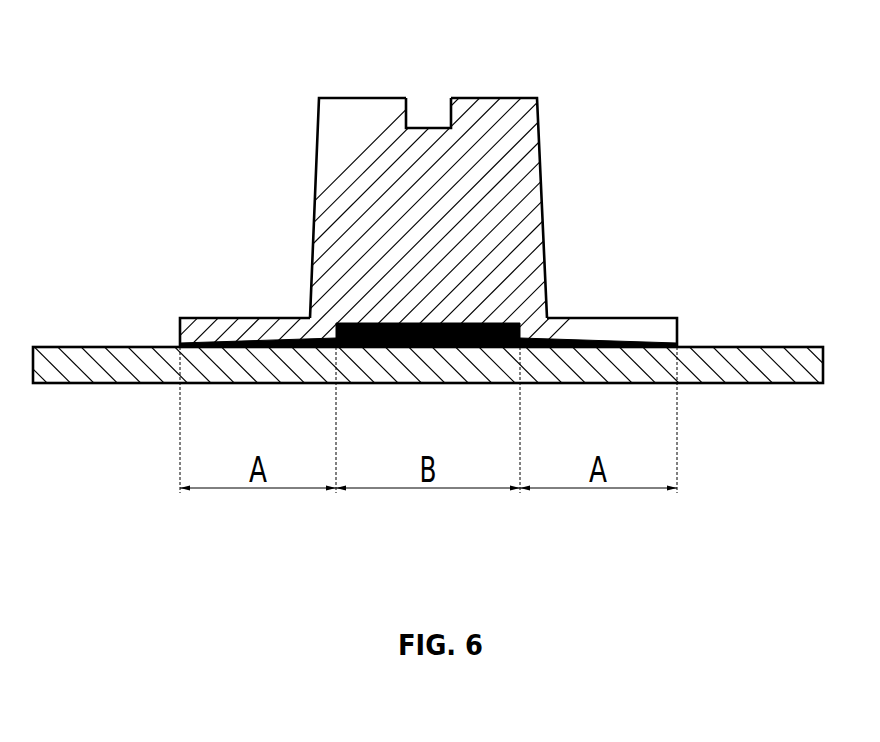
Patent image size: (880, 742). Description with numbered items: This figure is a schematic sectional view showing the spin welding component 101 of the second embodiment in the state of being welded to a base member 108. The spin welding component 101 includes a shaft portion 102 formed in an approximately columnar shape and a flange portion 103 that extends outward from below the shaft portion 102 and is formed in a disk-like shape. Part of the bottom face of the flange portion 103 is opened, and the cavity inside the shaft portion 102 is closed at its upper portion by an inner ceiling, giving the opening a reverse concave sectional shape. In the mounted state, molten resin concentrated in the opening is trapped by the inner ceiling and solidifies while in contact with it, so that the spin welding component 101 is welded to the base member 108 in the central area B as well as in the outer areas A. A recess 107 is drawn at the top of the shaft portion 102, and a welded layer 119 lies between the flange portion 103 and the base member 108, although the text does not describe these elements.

The spin welding component 101 is at (476, 176).
The shaft portion 102 is at (314, 188).
The flange portion 103 is at (210, 333).
The recess / groove 107 is at (440, 98).
The base member 108 is at (111, 366).
The bonding layer 119 is at (563, 336).